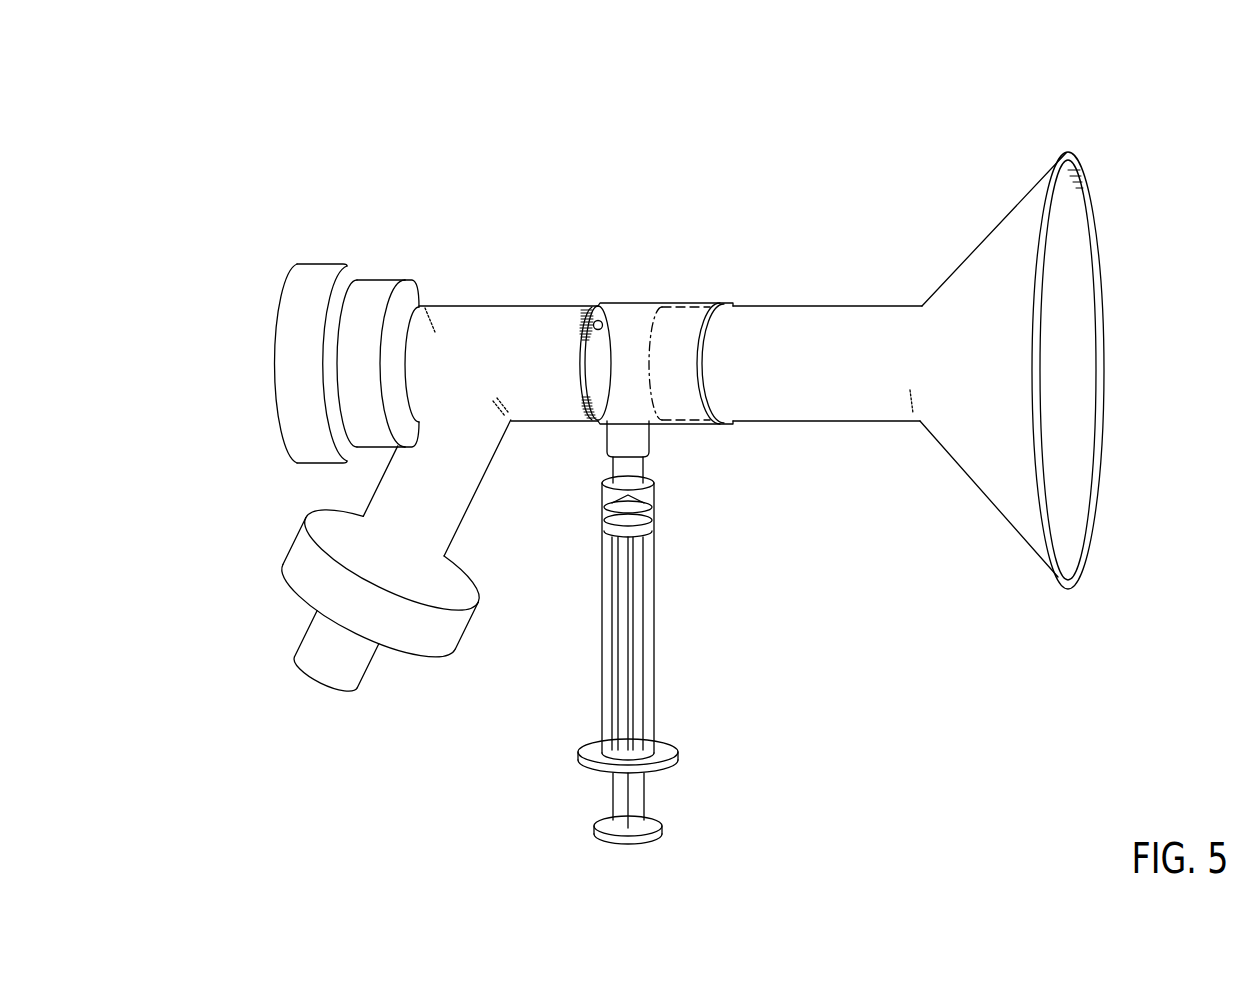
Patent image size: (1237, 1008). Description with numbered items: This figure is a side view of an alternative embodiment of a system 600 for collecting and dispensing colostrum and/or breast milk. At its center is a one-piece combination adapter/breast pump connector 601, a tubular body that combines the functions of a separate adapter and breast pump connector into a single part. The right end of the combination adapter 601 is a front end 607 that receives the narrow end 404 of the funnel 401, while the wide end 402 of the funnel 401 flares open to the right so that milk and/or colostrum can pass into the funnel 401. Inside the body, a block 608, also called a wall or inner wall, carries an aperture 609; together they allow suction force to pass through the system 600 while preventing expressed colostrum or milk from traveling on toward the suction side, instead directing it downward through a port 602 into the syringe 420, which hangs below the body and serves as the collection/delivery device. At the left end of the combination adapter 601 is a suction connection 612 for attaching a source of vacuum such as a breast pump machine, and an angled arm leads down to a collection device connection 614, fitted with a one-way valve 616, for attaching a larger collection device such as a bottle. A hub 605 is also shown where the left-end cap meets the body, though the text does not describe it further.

The system 600 is at (846, 135).
The combination adapter/breast pump connector 601 is at (458, 306).
The hub cap 605 is at (323, 279).
The suction connection 612 is at (273, 315).
The collection device connection 614 is at (290, 528).
The one-way valve 616 is at (327, 667).
The block 608 is at (596, 370).
The aperture 609 is at (603, 326).
The front end 607 is at (727, 305).
The narrow end 404 is at (687, 303).
The funnel 401 is at (897, 305).
The wide end 402 is at (1082, 430).
The port 602 is at (632, 442).
The syringe 420 is at (676, 617).